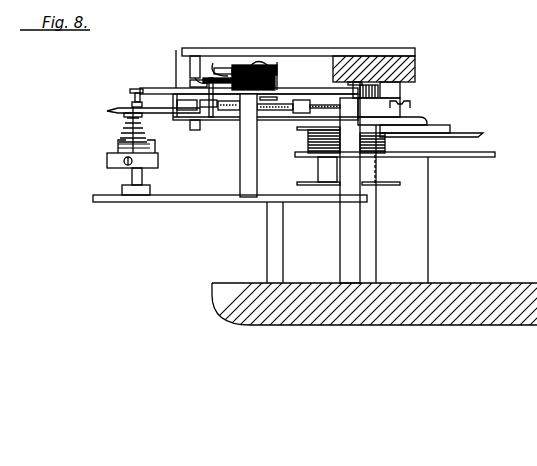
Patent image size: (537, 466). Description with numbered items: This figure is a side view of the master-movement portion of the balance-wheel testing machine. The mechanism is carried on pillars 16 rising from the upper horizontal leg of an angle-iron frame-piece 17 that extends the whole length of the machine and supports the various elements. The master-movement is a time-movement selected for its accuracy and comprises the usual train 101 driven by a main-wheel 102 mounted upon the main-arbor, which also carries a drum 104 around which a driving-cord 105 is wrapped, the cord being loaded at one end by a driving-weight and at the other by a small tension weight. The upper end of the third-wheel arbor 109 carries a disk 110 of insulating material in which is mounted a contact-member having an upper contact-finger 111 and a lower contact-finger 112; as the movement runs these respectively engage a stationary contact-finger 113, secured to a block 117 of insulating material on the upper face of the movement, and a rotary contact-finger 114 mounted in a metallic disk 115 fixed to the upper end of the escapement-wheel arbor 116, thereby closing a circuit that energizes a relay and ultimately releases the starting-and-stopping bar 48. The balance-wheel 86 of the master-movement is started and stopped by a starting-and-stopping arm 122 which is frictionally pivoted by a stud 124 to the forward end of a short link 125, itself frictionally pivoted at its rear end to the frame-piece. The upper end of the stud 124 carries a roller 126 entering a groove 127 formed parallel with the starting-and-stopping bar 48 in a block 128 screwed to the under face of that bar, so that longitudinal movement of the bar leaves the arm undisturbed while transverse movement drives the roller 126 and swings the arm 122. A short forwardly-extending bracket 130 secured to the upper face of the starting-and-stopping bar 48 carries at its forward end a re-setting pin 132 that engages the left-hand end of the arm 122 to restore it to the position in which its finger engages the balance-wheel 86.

The pillars 16 is at (267, 243).
The angle-iron frame-piece 17 is at (483, 292).
The starting-and-stopping bar 48 is at (413, 68).
The balance-wheel 86 is at (107, 111).
The train 101 is at (276, 111).
The main-wheel 102 is at (390, 101).
The drum 104 is at (316, 166).
The driving-cord 105 is at (459, 157).
The third-wheel arbor 109 is at (278, 85).
The disk 110 is at (276, 74).
The upper contact-finger 111 is at (249, 64).
The lower contact-finger 112 is at (176, 64).
The stationary contact-finger 113 is at (215, 64).
The rotary contact-finger 114 is at (212, 118).
The metallic disk 115 is at (192, 89).
The escapement-wheel arbor 116 is at (156, 88).
The block 117 is at (274, 64).
The starting-and-stopping arm 122 is at (165, 118).
The stud 124 is at (424, 128).
The short link 125 is at (422, 119).
The roller 126 is at (372, 86).
The groove 127 is at (357, 82).
The block 128 is at (388, 84).
The bracket 130 is at (258, 47).
The re-setting pin 132 is at (190, 80).